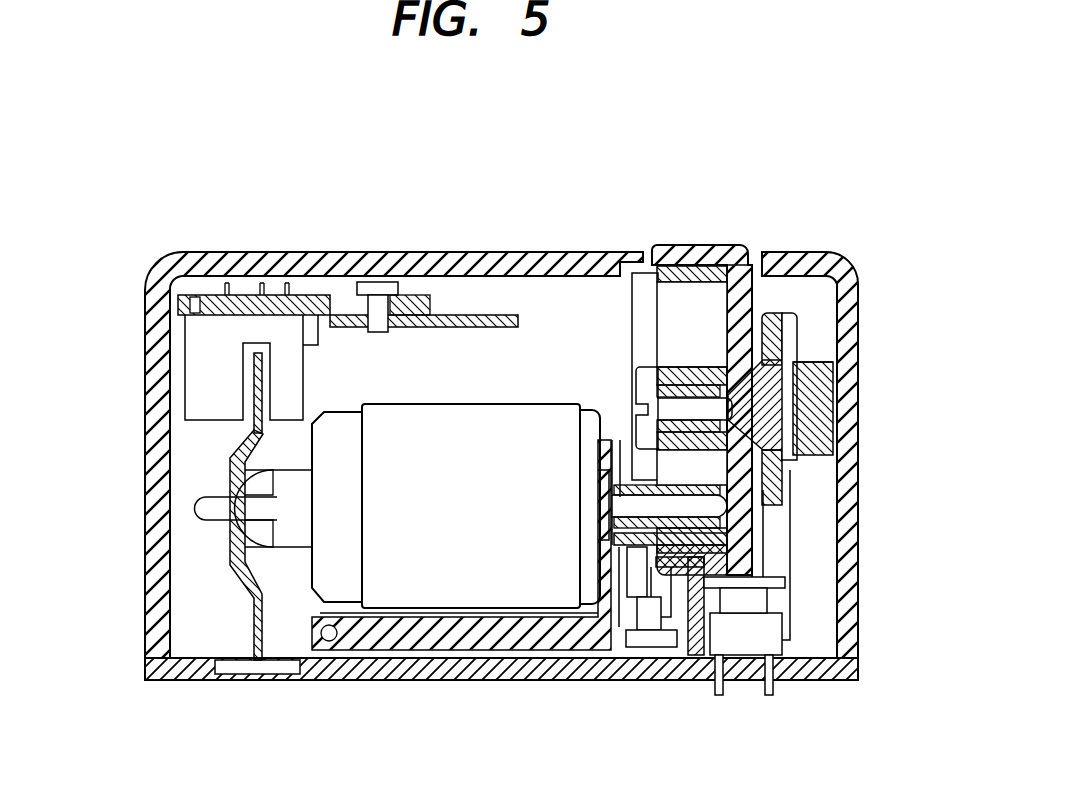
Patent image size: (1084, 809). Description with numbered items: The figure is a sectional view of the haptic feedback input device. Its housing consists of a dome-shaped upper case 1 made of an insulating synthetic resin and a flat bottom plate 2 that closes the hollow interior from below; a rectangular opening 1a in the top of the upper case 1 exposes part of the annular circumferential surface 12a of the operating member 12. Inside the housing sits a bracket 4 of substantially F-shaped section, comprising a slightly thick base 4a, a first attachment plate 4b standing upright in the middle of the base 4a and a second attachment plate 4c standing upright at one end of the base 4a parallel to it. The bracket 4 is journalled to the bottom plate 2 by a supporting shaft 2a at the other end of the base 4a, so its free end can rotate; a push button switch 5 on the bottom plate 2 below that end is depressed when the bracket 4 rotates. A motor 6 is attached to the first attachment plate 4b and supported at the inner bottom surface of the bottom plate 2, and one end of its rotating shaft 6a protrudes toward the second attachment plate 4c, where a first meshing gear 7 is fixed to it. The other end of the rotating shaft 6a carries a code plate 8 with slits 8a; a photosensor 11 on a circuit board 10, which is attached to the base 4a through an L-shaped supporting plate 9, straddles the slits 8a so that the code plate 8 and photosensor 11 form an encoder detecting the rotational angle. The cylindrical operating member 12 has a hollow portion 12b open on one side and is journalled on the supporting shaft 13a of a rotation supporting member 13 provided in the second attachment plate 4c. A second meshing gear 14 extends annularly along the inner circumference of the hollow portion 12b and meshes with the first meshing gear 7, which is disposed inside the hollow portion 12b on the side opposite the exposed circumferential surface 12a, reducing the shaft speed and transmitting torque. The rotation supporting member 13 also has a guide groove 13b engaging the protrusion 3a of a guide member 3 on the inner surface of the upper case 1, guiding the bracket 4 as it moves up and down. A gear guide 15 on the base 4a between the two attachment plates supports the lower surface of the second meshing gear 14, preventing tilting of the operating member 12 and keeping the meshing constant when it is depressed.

The upper case 1 is at (147, 600).
The opening 1a is at (797, 252).
The bottom plate 2 is at (205, 678).
The supporting shaft 2a is at (302, 672).
The guide member 3 is at (838, 415).
The protrusion 3a is at (822, 362).
The bracket 4 is at (385, 616).
The base 4a is at (475, 640).
The first attachment plate 4b is at (612, 430).
The second attachment plate 4c is at (775, 512).
The push button switch 5 is at (748, 640).
The motor 6 is at (548, 400).
The rotating shaft 6a is at (215, 510).
The first meshing gear 7 is at (602, 545).
The code plate 8 is at (226, 452).
The slits 8a is at (255, 362).
The supporting plate 9 is at (450, 318).
The circuit board 10 is at (330, 305).
The photosensor 11 is at (205, 335).
The operating member 12 is at (757, 298).
The circumferential surface 12a is at (692, 245).
The hollow portion 12b is at (745, 265).
The rotation supporting member 13 is at (775, 425).
The supporting shaft 13a is at (800, 335).
The guide groove 13b is at (805, 340).
The second meshing gear 14 is at (658, 270).
The gear guide 15 is at (628, 565).